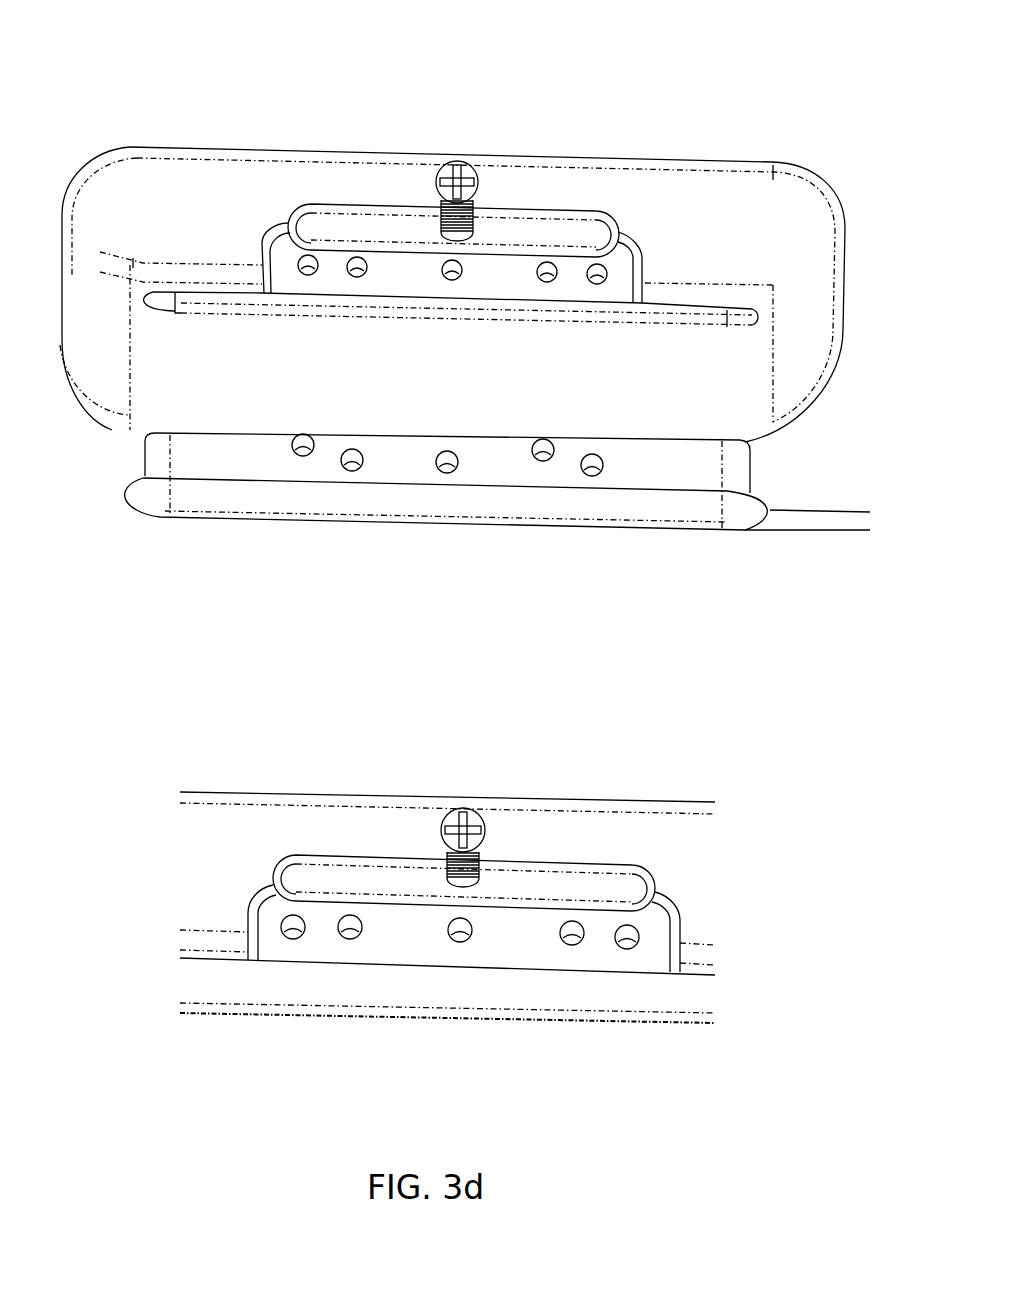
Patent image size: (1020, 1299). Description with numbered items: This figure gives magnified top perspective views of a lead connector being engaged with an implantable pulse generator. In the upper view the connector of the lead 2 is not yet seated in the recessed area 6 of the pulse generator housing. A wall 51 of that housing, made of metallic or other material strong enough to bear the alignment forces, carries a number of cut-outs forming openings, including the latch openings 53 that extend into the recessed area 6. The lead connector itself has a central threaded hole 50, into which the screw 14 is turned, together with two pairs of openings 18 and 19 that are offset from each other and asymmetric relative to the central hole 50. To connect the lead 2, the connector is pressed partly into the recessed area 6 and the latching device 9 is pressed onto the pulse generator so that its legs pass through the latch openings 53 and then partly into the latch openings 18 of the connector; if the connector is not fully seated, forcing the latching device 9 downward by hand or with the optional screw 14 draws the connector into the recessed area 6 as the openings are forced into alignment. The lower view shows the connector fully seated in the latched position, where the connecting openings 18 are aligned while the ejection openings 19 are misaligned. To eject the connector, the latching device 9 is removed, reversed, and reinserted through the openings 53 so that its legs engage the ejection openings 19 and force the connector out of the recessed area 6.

The lead 2 is at (823, 528).
The recessed area 6 is at (153, 291).
The latching device 9 is at (569, 225).
The screw 14 is at (455, 163).
The latch openings 18 is at (618, 929).
The ejection openings 19 is at (302, 919).
The central threaded hole 50 is at (443, 455).
The wall 51 is at (262, 243).
The latch openings 53 is at (539, 266).